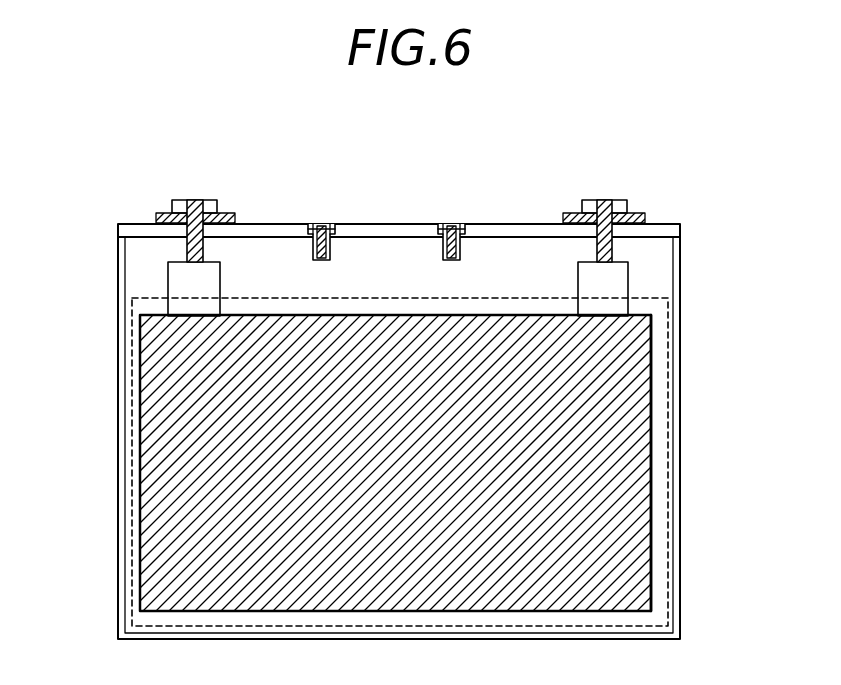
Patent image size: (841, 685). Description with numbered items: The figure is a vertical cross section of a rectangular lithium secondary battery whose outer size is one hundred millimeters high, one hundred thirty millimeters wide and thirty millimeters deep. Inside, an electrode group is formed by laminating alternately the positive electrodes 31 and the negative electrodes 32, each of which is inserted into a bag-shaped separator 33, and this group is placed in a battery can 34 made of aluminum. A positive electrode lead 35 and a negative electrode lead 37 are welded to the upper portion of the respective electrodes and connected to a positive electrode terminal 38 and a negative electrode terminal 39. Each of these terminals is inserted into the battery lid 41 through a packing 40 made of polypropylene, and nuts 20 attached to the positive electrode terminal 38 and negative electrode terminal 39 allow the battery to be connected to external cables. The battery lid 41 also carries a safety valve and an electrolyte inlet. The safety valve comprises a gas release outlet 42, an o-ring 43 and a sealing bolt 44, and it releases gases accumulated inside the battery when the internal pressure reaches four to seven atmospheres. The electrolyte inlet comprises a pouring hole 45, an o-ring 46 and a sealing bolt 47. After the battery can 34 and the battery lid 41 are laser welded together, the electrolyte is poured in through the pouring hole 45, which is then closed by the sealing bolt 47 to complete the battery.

The nut 20 is at (178, 200).
The positive electrode 31 is at (162, 500).
The negative electrode 32 is at (655, 500).
The separator 33 is at (131, 584).
The battery can 34 is at (124, 350).
The positive electrode lead 35 is at (170, 290).
The negative electrode lead 37 is at (622, 288).
The positive electrode terminal 38 is at (200, 200).
The negative electrode terminal 39 is at (610, 200).
The packing 40 is at (157, 214).
The battery lid 41 is at (118, 231).
The gas release outlet 42 is at (330, 258).
The o-ring 43 is at (333, 228).
The sealing bolt 44 is at (320, 226).
The pouring hole 45 is at (462, 258).
The o-ring 46 is at (463, 228).
The sealing bolt 47 is at (450, 226).